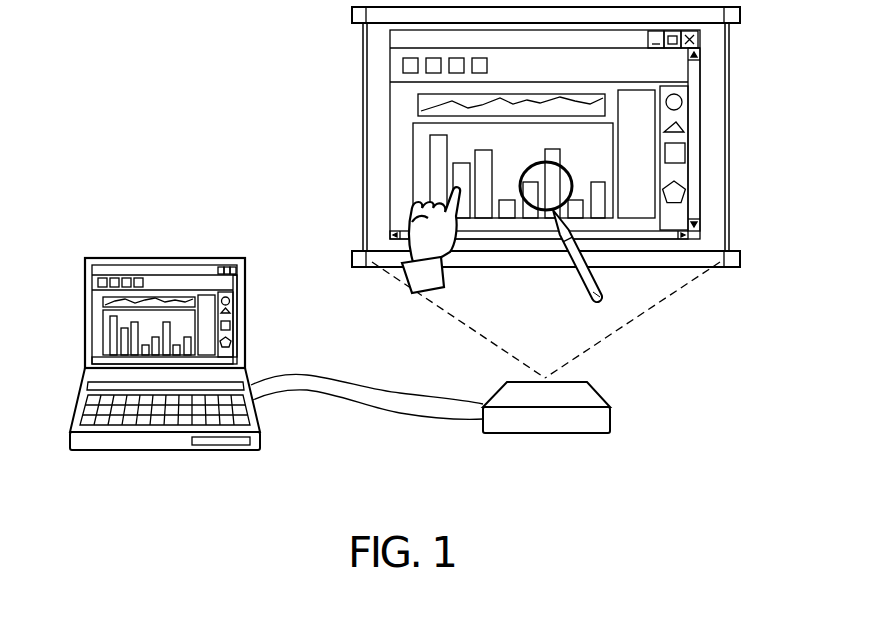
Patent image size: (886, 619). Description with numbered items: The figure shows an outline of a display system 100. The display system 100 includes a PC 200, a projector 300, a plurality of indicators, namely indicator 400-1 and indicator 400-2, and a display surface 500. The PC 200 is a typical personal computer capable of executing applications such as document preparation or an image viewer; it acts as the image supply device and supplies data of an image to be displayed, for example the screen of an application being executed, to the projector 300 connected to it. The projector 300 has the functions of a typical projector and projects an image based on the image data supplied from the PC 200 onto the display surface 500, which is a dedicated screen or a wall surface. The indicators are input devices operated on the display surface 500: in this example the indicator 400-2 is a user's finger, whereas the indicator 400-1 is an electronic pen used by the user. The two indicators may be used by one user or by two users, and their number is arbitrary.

The display system 100 is at (206, 86).
The PC 200 is at (128, 258).
The projector 300 is at (509, 390).
The indicator 400-1 is at (597, 304).
The indicator 400-2 is at (410, 222).
The display surface 500 is at (364, 100).